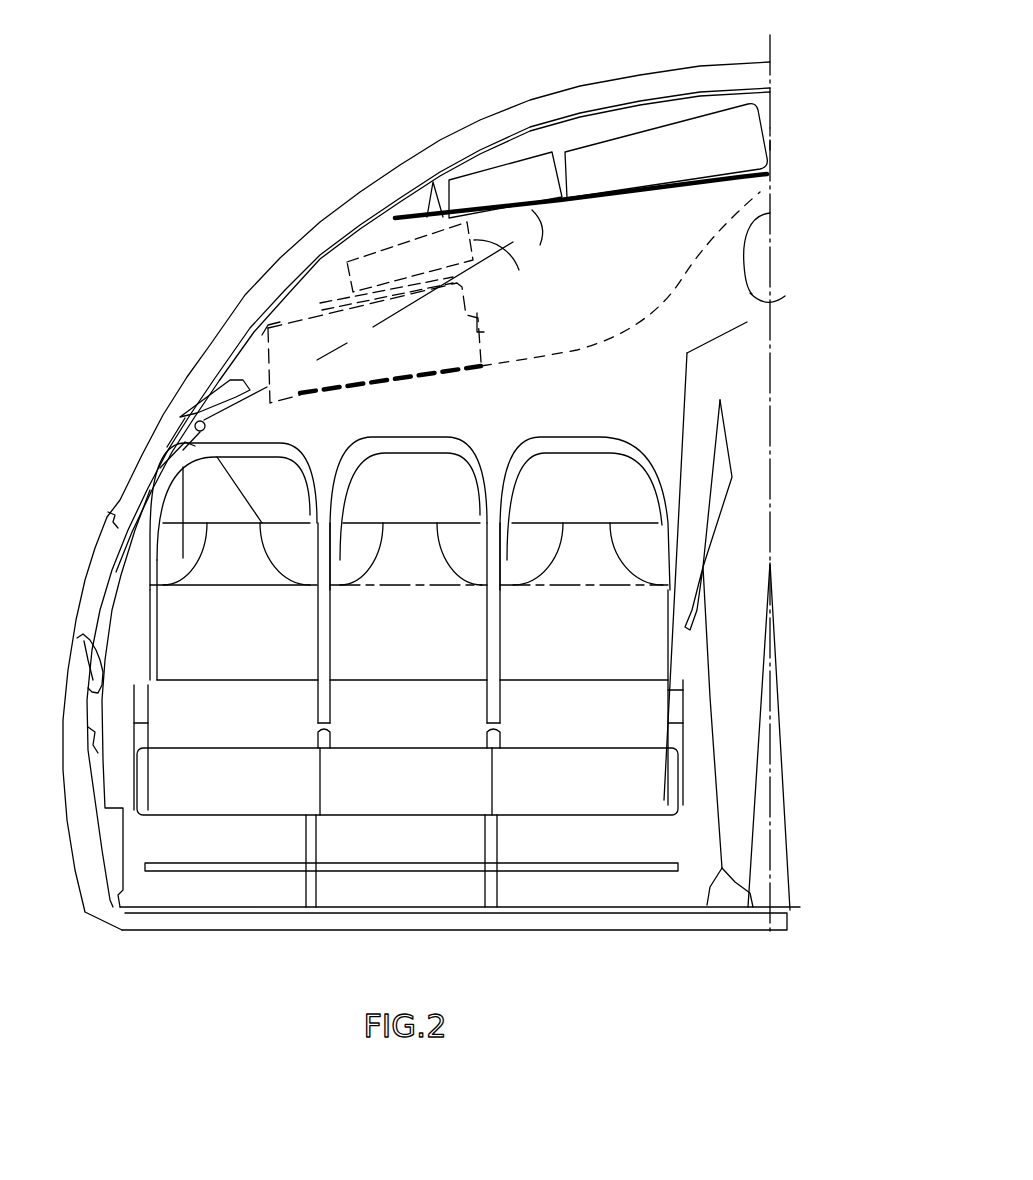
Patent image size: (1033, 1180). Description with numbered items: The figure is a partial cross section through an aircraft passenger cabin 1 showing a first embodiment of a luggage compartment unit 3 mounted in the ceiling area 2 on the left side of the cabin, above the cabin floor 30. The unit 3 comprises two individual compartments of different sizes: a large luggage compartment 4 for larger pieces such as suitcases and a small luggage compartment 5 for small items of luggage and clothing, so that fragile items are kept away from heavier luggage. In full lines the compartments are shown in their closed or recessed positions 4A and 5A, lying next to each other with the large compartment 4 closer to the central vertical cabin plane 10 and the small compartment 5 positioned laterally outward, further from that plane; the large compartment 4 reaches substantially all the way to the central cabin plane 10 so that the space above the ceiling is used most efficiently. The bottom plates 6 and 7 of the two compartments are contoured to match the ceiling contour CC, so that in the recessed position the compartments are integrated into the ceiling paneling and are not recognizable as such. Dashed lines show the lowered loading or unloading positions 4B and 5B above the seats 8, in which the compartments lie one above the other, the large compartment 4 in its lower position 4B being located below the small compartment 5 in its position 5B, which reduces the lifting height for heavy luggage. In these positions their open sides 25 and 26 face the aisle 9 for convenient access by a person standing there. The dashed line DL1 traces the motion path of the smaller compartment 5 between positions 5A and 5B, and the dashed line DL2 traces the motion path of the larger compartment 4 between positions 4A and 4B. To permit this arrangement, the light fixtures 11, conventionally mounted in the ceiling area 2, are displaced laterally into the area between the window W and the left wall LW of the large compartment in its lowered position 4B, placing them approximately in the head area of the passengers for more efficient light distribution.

The passenger cabin 1 is at (276, 200).
The ceiling area 2 is at (806, 89).
The luggage compartment unit 3 is at (548, 120).
The large luggage compartment 4 is at (666, 120).
The closed or recessed position of the large compartment 4A is at (684, 166).
The lowered open position of the large compartment 4B is at (425, 356).
The small luggage compartment 5 is at (452, 193).
The closed or recessed position of the small compartment 5A is at (503, 183).
The lowered open position of the small compartment 5B is at (347, 273).
The bottom plate of the large compartment 6 is at (649, 196).
The bottom plate of the small compartment 7 is at (518, 255).
The seats 8 is at (163, 610).
The aisle 9 is at (776, 890).
The central vertical cabin plane 10 is at (765, 180).
The light fixtures 11 is at (190, 413).
The open side of the large compartment 25 is at (484, 323).
The open side of the small compartment 26 is at (505, 272).
The cabin floor 30 is at (454, 946).
The window W is at (97, 549).
The left wall of the larger compartment LW is at (263, 342).
The motion path of the smaller compartment DL1 is at (561, 214).
The motion path of the larger compartment DL2 is at (588, 342).
The ceiling contour CC is at (722, 212).